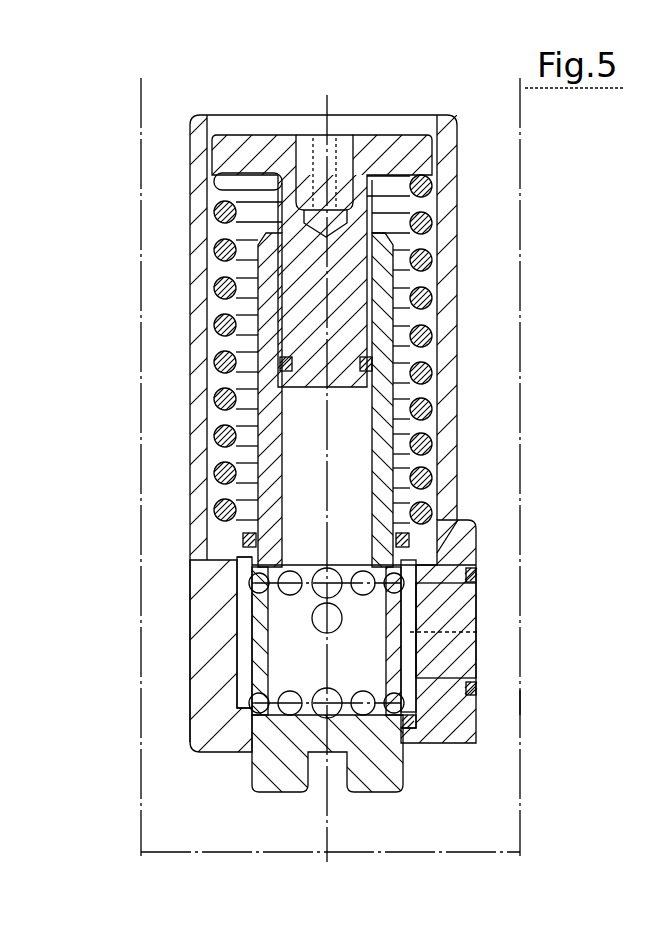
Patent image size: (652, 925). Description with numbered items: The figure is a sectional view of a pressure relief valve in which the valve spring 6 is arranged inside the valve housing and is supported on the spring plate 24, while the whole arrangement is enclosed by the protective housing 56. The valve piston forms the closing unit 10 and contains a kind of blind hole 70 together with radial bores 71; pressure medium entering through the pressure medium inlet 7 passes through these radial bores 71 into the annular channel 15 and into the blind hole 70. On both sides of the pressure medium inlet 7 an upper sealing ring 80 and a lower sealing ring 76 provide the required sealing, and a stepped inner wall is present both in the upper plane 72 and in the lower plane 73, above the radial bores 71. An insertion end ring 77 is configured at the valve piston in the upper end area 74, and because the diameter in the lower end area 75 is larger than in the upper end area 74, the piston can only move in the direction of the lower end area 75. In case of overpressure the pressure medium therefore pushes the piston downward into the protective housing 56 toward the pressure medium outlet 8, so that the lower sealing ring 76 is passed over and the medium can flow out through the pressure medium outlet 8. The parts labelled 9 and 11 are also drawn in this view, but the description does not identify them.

The pressure medium outlet 8 is at (227, 127).
The spring plate 24 is at (413, 150).
The valve spring 6 is at (388, 258).
The housing wall 11 is at (452, 385).
The closing unit 10 is at (395, 462).
The insertion end ring 77 is at (413, 553).
The valve body section 9 is at (425, 564).
The pressure medium inlet 7 is at (465, 608).
The lower end area 75 is at (415, 690).
The protective housing 56 is at (523, 702).
The lower sealing ring 76 is at (412, 732).
The upper sealing ring 80 is at (243, 540).
The upper end area 74 is at (237, 557).
The upper plane 72 is at (250, 575).
The radial bores 71 is at (255, 597).
The annular channel 15 is at (230, 652).
The blind hole 70 is at (290, 668).
The lower plane 73 is at (262, 712).